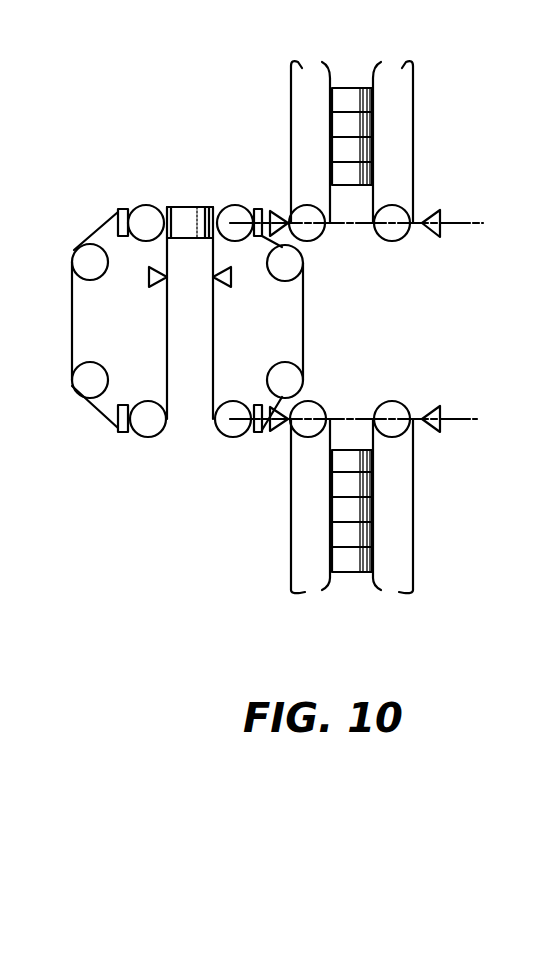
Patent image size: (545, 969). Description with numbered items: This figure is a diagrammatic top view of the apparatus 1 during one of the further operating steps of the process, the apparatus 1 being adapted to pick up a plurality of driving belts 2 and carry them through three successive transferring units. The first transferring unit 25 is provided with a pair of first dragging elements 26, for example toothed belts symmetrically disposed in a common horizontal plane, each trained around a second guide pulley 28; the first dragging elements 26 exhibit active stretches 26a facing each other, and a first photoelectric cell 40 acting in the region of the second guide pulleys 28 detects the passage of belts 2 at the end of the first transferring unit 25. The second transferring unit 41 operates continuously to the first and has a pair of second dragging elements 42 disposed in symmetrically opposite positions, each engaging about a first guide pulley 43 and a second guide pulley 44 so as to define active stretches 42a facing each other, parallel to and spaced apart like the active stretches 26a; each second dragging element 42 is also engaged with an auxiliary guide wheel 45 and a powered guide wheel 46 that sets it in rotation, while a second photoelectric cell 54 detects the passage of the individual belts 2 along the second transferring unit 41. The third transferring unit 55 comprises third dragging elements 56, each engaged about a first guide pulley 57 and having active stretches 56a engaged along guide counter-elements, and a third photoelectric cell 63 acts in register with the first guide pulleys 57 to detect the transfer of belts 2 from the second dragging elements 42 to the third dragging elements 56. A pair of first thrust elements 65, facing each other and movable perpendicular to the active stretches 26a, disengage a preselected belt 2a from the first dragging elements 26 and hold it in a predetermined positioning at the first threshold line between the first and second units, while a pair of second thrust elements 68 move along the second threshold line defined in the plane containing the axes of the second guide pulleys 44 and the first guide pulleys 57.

The apparatus 1 is at (165, 146).
The driving belts 2 is at (360, 150).
The preselected belt 2a is at (173, 207).
The first transferring unit 25 is at (257, 594).
The first dragging elements 26 is at (290, 506).
The active stretches 26a is at (366, 586).
The second guide pulley 28 is at (306, 436).
The first photoelectric cell 40 is at (279, 432).
The second transferring unit 41 is at (350, 289).
The second dragging elements 42 is at (72, 325).
The active stretches 42a is at (183, 334).
The first guide pulley 43 is at (148, 437).
The second guide pulley 44 is at (149, 226).
The auxiliary guide wheel 45 is at (75, 256).
The powered guide wheel 46 is at (72, 380).
The second photoelectric cell 54 is at (148, 277).
The third transferring unit 55 is at (249, 46).
The third dragging elements 56 is at (290, 86).
The active stretches 56a is at (368, 72).
The first guide pulley 57 is at (304, 213).
The third photoelectric cell 63 is at (272, 207).
The first thrust elements 65 is at (122, 404).
The second thrust elements 68 is at (117, 214).